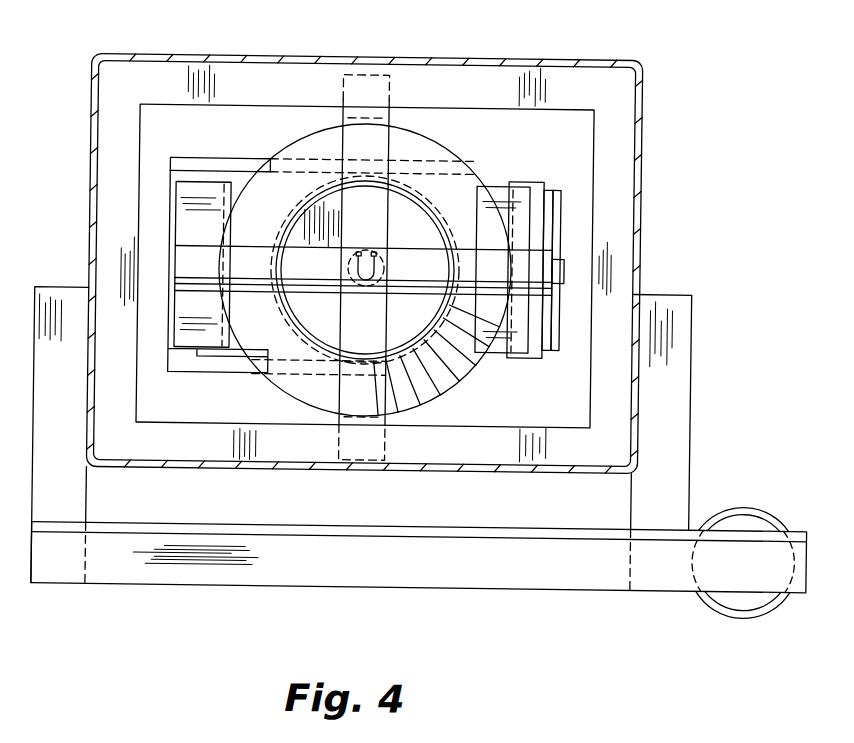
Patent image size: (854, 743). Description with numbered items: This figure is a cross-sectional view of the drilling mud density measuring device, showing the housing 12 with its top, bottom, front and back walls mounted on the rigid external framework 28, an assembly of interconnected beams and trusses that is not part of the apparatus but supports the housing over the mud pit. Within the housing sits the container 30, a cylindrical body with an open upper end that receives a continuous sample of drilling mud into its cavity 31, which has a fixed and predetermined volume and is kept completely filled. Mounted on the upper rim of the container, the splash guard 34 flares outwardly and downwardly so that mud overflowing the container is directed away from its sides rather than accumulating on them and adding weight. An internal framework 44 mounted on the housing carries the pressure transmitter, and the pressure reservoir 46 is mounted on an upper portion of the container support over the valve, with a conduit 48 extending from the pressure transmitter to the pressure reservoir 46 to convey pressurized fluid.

The housing 12 is at (638, 248).
The rigid external framework 28 is at (78, 492).
The container 30 is at (434, 204).
The cavity 31 is at (309, 329).
The splash guard 34 is at (438, 159).
The internal framework 44 is at (361, 113).
The pressure reservoir 46 is at (253, 282).
The conduit 48 is at (372, 258).